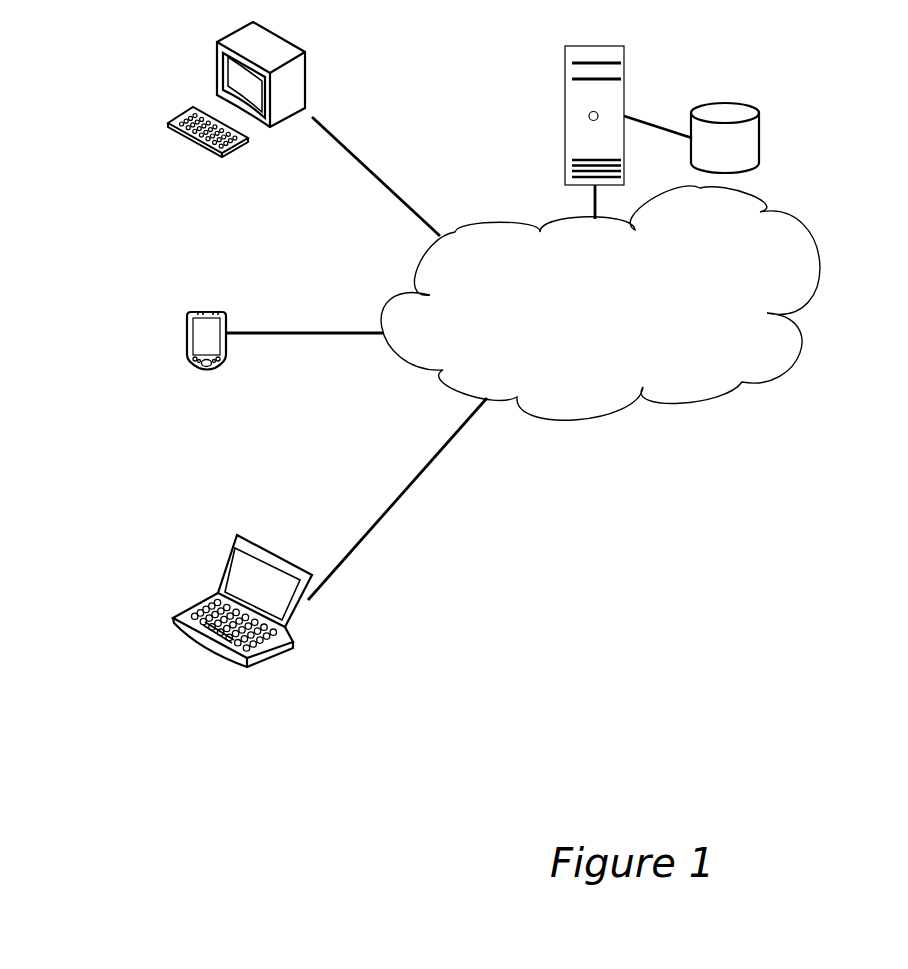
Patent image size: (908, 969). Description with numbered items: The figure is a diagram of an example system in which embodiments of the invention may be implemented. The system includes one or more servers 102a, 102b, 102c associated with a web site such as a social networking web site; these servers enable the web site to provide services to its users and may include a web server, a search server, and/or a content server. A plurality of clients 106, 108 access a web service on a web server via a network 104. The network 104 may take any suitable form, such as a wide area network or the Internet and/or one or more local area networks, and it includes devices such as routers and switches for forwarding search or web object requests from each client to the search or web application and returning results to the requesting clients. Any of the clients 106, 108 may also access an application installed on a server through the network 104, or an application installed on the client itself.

The desktop computer client device 102a is at (185, 100).
The handheld client device 102b is at (180, 327).
The laptop client device 102c is at (198, 590).
The network 104 is at (600, 303).
The client 106 is at (629, 71).
The client 108 is at (772, 136).